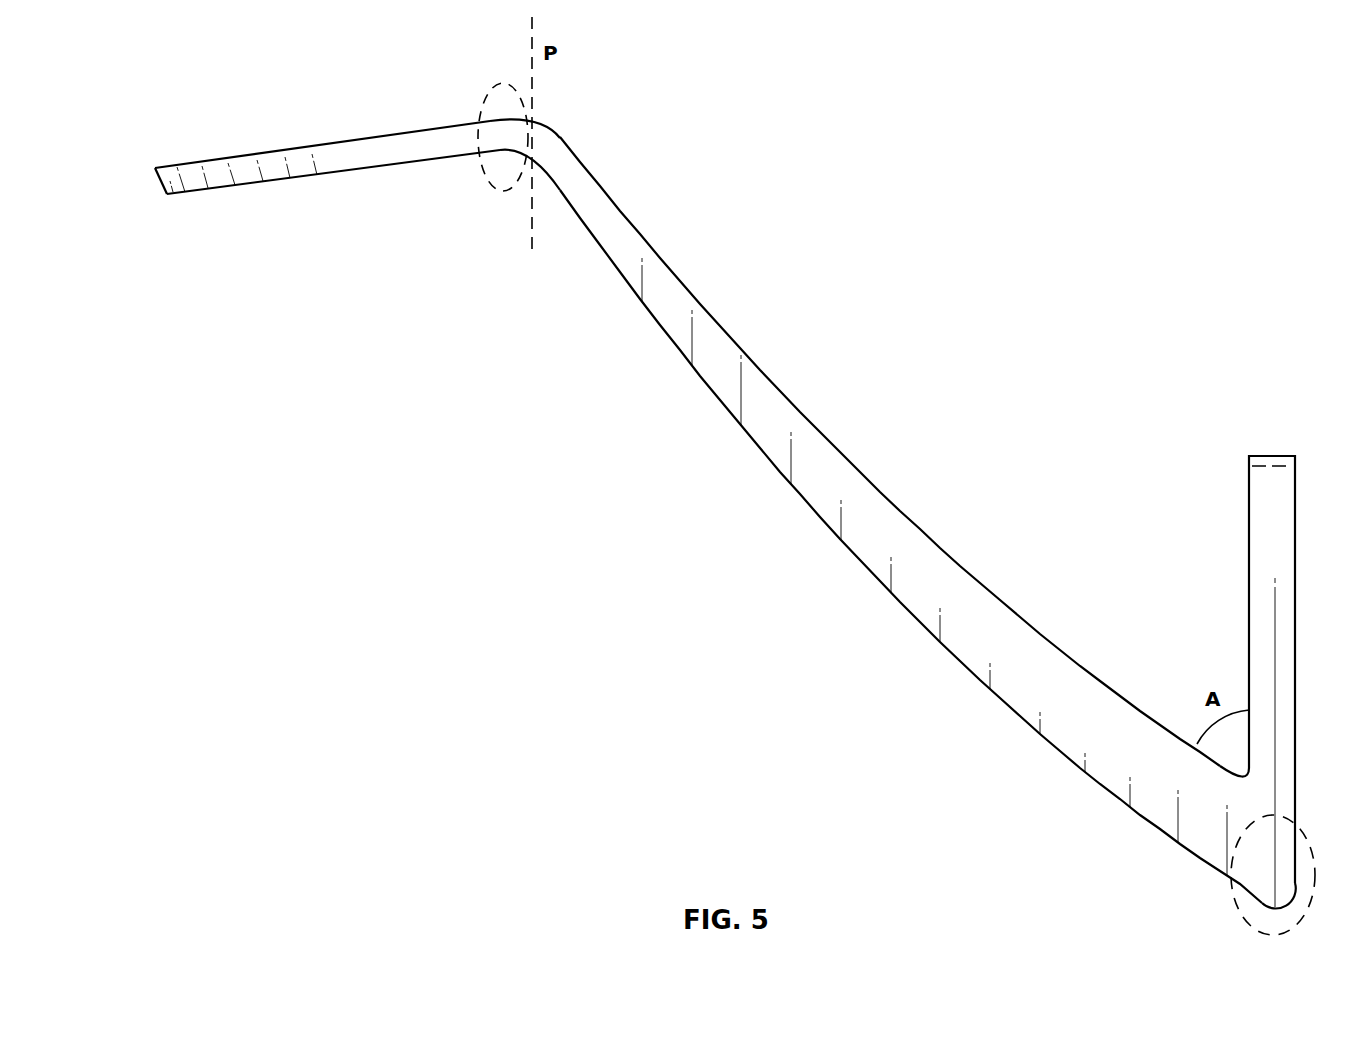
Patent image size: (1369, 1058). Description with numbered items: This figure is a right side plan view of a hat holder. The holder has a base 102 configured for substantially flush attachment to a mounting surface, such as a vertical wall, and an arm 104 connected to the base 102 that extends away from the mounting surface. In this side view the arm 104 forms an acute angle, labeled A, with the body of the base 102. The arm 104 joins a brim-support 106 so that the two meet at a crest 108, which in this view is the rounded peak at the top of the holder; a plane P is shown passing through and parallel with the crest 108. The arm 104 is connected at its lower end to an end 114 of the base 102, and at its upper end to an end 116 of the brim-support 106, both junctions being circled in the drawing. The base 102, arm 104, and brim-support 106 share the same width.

The base 102 is at (1268, 518).
The arm 104 is at (843, 473).
The brim-support 106 is at (368, 152).
The crest 108 is at (548, 127).
The end of base 114 is at (1232, 895).
The end of brim-support 116 is at (493, 88).